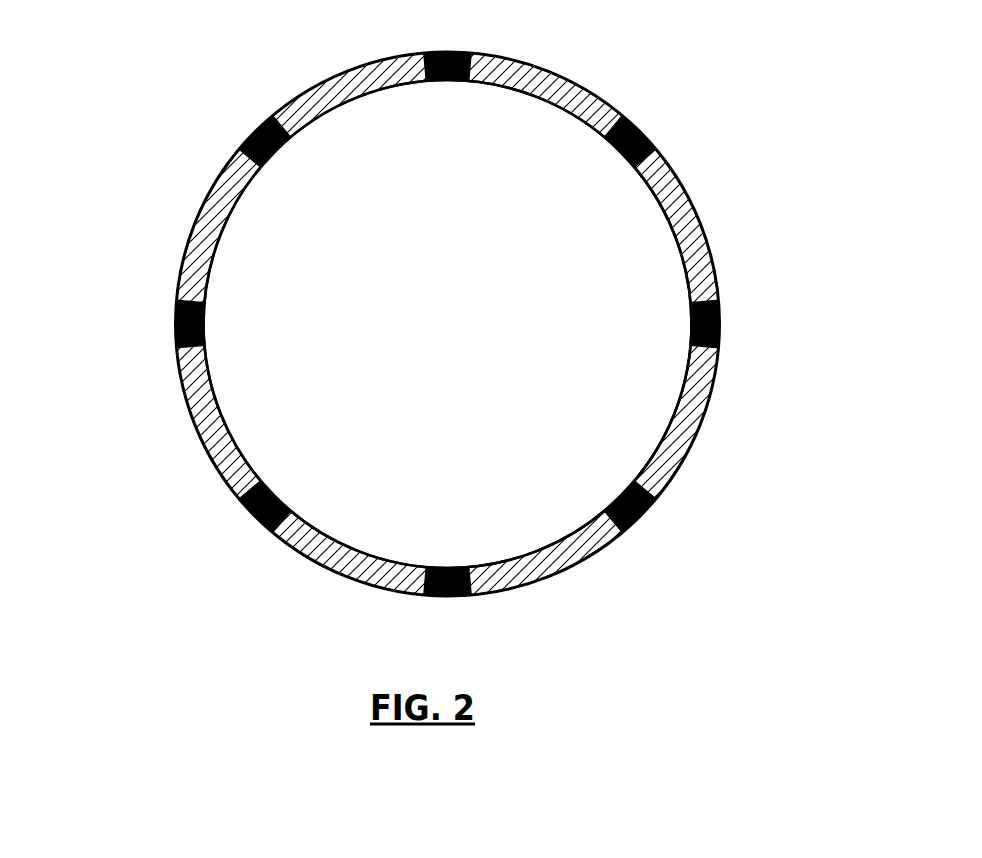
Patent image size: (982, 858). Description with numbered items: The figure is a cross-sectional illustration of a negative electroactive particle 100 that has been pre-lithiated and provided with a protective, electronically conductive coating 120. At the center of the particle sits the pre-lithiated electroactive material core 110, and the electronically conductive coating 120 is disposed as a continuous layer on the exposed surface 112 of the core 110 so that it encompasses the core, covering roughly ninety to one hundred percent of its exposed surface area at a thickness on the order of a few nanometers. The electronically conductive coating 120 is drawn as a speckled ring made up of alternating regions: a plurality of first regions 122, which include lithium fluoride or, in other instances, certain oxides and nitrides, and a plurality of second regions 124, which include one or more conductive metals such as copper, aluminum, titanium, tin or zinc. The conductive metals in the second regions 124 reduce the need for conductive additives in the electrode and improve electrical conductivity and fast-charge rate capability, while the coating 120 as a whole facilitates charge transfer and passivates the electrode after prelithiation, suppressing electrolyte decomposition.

The negative electroactive particle 100 is at (182, 79).
The pre-lithiated electroactive material core 110 is at (467, 336).
The exposed surface 112 is at (325, 541).
The electronically conductive coating 120 is at (694, 182).
The first regions 122 is at (175, 322).
The second regions 124 is at (693, 440).